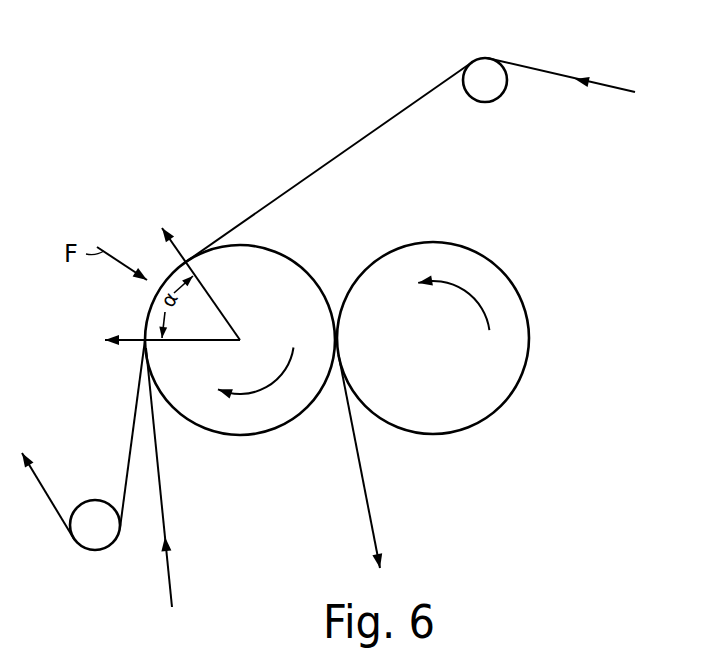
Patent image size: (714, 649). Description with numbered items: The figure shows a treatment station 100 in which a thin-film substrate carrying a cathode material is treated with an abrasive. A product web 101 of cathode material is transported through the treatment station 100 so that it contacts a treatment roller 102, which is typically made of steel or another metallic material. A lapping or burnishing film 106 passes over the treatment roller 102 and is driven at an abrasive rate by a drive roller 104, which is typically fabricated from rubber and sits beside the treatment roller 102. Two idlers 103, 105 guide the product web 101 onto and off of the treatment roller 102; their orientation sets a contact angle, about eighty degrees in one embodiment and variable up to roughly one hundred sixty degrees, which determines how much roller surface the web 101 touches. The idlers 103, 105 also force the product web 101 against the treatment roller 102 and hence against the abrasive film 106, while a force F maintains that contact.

The treatment station 100 is at (632, 216).
The product web 101 is at (337, 153).
The treatment roller 102 is at (272, 249).
The idler 103 is at (485, 56).
The drive roller 104 is at (513, 284).
The idler 105 is at (95, 543).
The lapping or burnishing film 106 is at (163, 517).